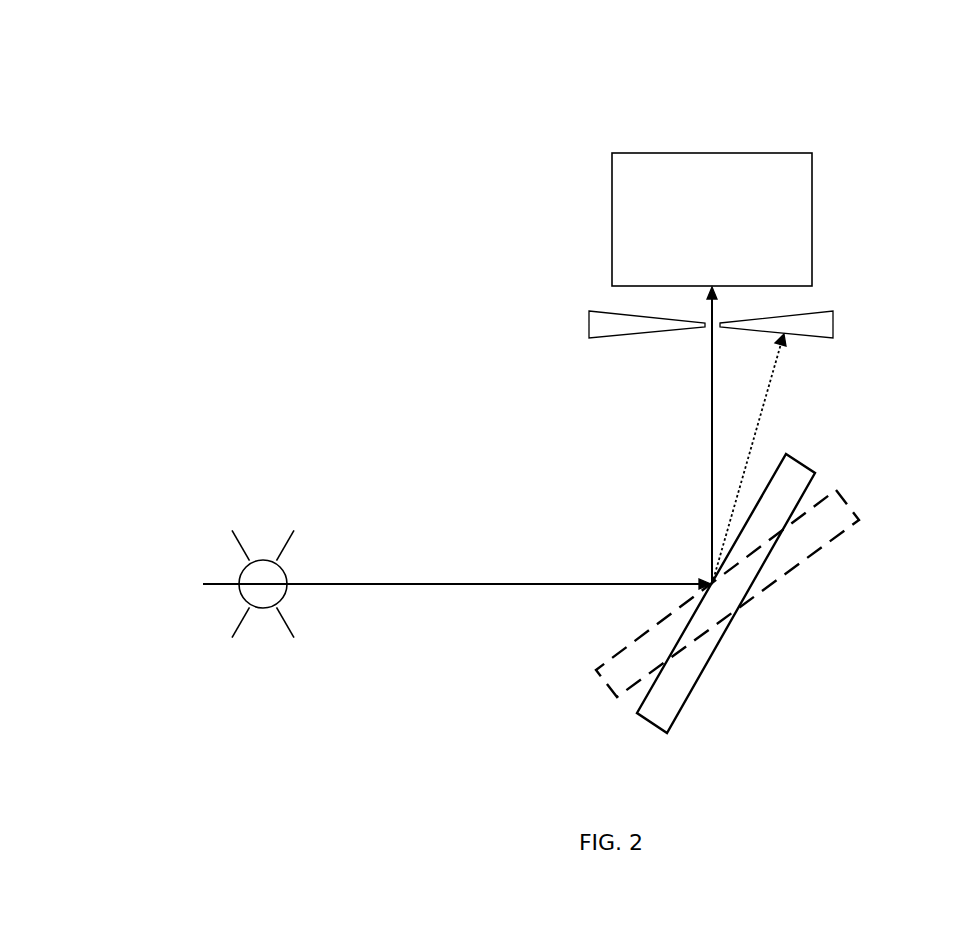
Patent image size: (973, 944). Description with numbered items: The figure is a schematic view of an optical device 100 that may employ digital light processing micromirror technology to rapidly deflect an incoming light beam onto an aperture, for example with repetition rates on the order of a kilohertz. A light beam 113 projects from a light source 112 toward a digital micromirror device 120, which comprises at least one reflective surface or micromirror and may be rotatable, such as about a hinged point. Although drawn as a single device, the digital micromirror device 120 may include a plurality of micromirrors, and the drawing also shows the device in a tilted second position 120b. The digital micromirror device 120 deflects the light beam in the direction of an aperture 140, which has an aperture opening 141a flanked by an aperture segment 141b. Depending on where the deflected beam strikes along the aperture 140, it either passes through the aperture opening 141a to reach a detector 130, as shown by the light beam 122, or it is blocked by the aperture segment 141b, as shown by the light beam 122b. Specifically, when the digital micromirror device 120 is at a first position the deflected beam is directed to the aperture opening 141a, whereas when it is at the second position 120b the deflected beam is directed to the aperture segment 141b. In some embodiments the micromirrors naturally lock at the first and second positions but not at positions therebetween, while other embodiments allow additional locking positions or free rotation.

The optical device 100 is at (424, 312).
The light source 112 is at (265, 552).
The light beam 113 is at (445, 593).
The digital micromirror device 120 is at (718, 658).
The reflective plate in tilted position 120b is at (807, 567).
The light beam 122 is at (705, 542).
The light beam 122b is at (785, 360).
The detector 130 is at (775, 145).
The aperture 140 is at (736, 304).
The aperture opening 141a is at (699, 336).
The aperture segment 141b is at (585, 332).